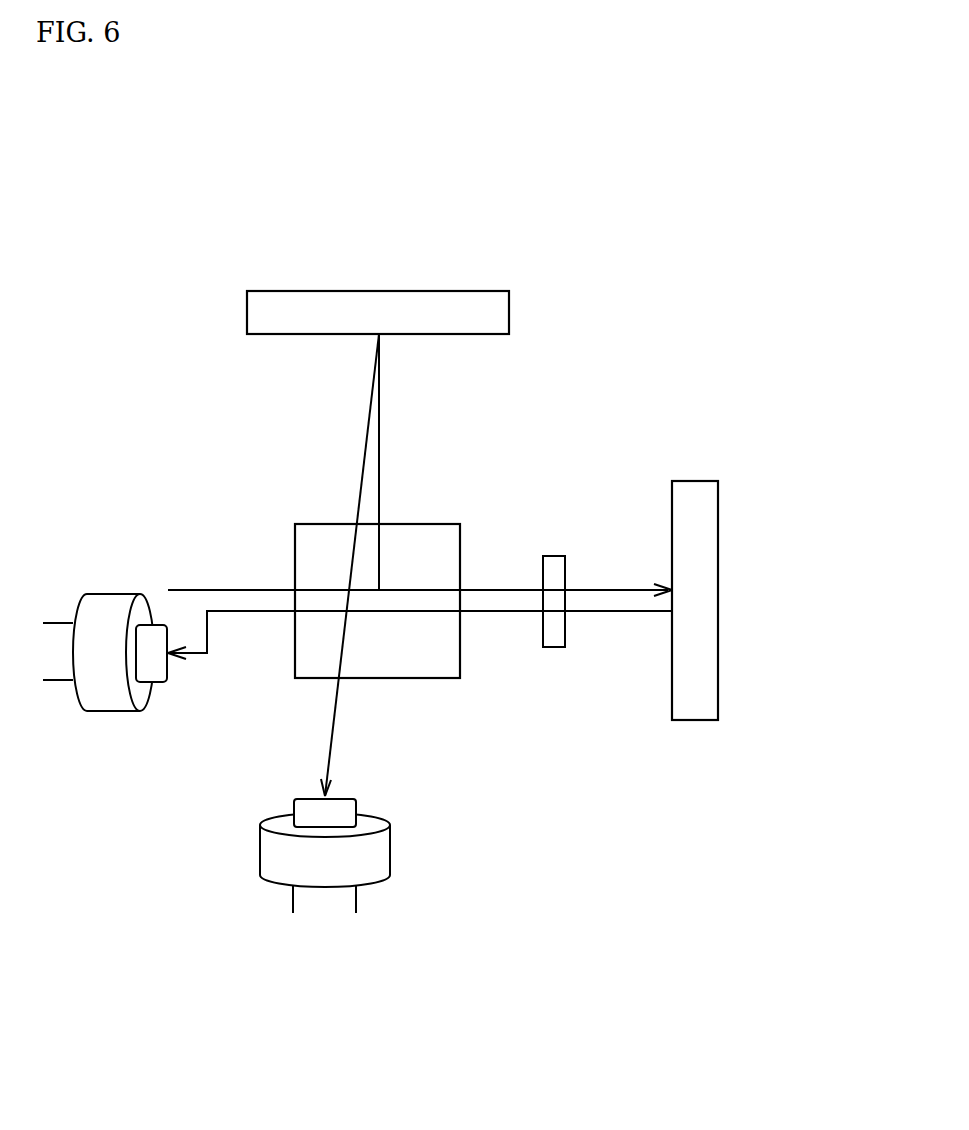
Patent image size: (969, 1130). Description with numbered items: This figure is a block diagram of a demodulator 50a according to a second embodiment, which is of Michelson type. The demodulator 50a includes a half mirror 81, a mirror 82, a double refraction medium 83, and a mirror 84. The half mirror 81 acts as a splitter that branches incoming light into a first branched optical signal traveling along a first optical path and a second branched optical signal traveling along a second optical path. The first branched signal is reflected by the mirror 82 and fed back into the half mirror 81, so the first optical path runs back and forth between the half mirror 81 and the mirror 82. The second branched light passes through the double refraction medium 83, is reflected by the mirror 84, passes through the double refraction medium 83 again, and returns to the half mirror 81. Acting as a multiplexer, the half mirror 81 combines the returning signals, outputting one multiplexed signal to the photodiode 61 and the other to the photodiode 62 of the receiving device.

The demodulator 50a is at (781, 252).
The photodiode 61 is at (390, 845).
The photodiode 62 is at (110, 711).
The half mirror 81 is at (295, 540).
The mirror 82 is at (509, 315).
The double refraction medium 83 is at (555, 556).
The mirror 84 is at (718, 510).